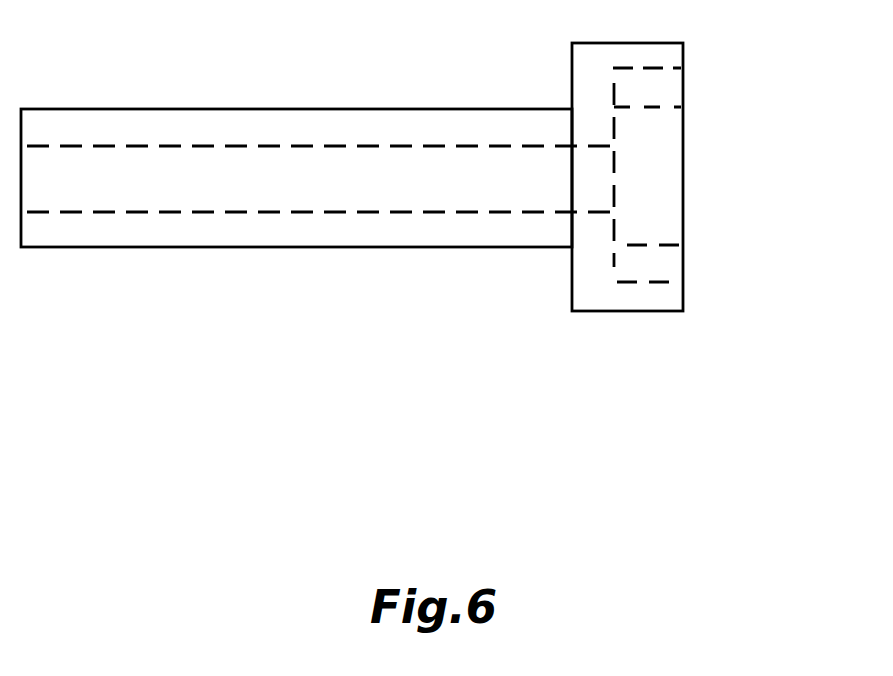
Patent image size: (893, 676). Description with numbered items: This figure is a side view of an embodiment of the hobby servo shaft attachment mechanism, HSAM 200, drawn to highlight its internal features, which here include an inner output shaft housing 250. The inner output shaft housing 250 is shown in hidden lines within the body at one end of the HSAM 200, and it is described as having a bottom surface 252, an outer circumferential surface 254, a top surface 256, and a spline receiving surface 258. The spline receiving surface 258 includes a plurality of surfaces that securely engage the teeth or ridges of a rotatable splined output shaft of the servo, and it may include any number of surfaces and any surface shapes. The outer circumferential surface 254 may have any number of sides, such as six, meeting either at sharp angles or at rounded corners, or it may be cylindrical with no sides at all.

The HSAM 200 is at (226, 353).
The inner output shaft housing 250 is at (690, 245).
The bottom surface 252 is at (682, 85).
The outer circumferential surface 254 is at (642, 263).
The top surface 256 is at (615, 263).
The spline receiving surface 258 is at (638, 95).